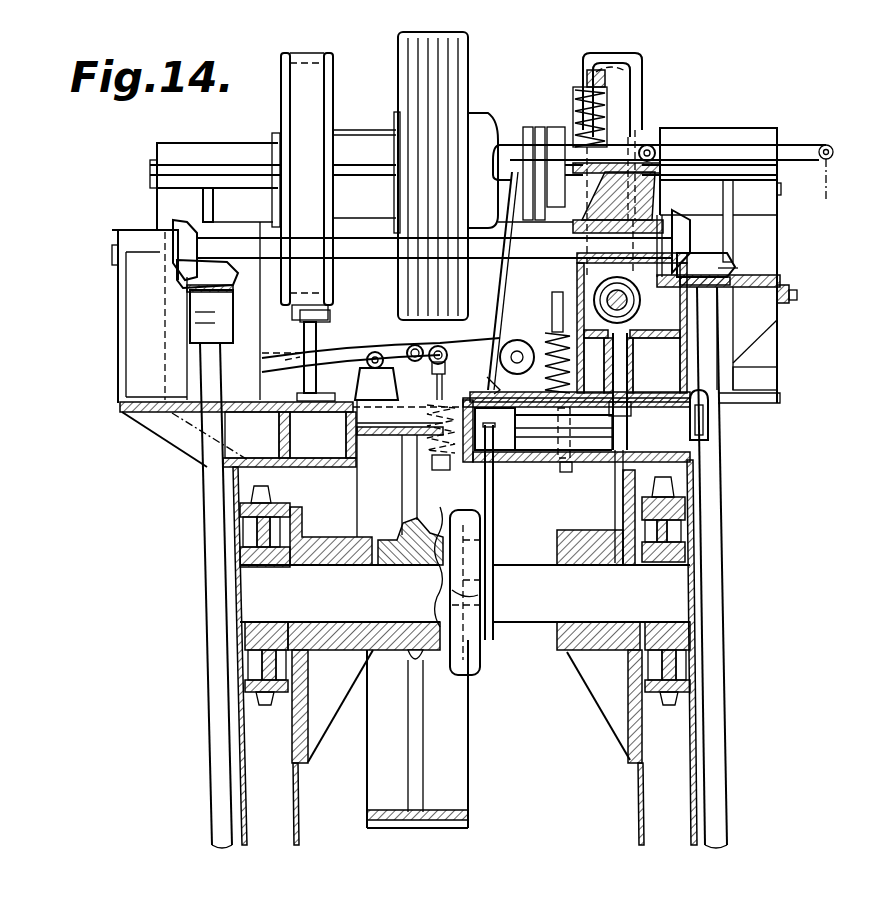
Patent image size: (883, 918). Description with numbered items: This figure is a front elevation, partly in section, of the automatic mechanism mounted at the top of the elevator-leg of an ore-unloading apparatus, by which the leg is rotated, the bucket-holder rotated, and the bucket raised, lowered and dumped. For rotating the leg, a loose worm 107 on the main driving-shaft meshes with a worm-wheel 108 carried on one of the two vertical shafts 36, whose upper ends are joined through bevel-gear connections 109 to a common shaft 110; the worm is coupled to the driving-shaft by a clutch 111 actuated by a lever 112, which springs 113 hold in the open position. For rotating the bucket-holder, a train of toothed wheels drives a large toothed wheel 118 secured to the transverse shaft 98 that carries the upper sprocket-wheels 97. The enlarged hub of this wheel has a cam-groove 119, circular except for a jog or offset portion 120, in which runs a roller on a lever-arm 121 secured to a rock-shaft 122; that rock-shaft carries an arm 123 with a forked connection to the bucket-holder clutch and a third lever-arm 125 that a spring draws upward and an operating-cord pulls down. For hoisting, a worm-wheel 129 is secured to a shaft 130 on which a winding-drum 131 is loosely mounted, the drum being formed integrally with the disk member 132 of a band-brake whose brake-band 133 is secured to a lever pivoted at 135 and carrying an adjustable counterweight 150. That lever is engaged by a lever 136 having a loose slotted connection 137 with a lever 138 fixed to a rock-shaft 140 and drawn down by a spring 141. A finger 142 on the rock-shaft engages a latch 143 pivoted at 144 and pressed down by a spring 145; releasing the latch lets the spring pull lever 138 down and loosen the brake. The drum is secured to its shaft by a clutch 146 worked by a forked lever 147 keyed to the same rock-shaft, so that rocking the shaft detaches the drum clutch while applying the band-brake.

The vertical shafts 36 is at (207, 538).
The sprocket-wheels 97 is at (252, 533).
The shaft 98 is at (465, 564).
The loose worm 107 is at (568, 329).
The worm-wheel 108 is at (797, 293).
The bevel-gear connections 109 is at (163, 280).
The common shaft 110 is at (434, 264).
The clutch 111 is at (674, 253).
The lever 112 is at (634, 356).
The springs 113 is at (522, 388).
The large toothed wheel 118 is at (460, 733).
The cam-groove 119 is at (480, 650).
The jog or offset portion 120 is at (483, 608).
The lever-arm 121 is at (490, 498).
The rock-shaft 122 is at (593, 428).
The arm 123 is at (615, 447).
The third lever-arm 125 is at (708, 437).
The worm-wheel 129 is at (640, 90).
The shaft 130 is at (157, 185).
The winding-drum 131 is at (443, 73).
The disk member 132 is at (330, 101).
The brake-band 133 is at (315, 305).
The pivot 135 is at (300, 362).
The lever 136 is at (348, 363).
The loose slotted connection 137 is at (420, 343).
The lever 138 is at (465, 371).
The rock-shaft 140 is at (517, 351).
The spring 141 is at (405, 467).
The finger 142 is at (520, 263).
The latch 143 is at (596, 157).
The latch pivot 144 is at (623, 167).
The spring 145 is at (567, 108).
The clutch 146 is at (478, 128).
The forked lever 147 is at (498, 281).
The counterweight 150 is at (300, 347).